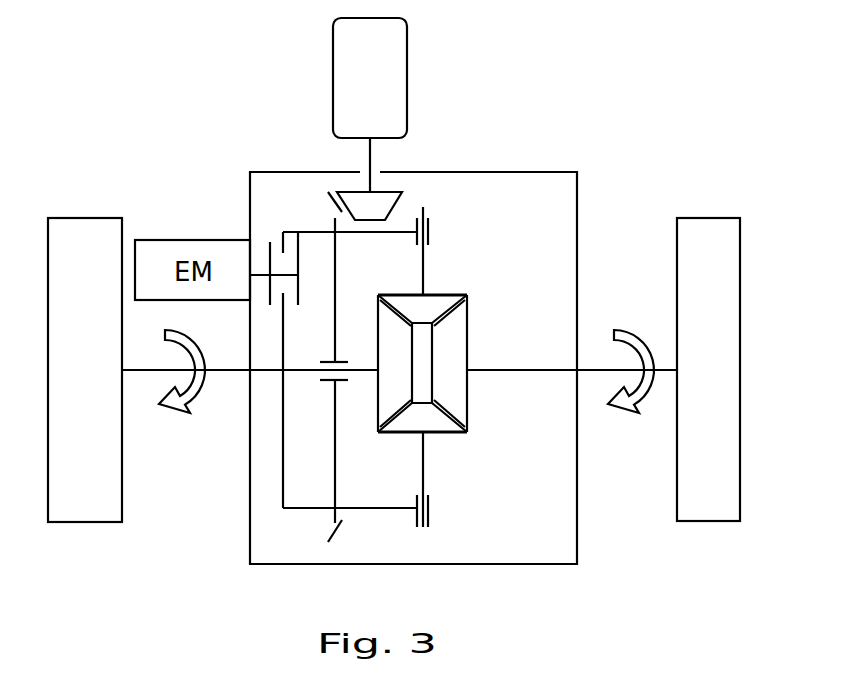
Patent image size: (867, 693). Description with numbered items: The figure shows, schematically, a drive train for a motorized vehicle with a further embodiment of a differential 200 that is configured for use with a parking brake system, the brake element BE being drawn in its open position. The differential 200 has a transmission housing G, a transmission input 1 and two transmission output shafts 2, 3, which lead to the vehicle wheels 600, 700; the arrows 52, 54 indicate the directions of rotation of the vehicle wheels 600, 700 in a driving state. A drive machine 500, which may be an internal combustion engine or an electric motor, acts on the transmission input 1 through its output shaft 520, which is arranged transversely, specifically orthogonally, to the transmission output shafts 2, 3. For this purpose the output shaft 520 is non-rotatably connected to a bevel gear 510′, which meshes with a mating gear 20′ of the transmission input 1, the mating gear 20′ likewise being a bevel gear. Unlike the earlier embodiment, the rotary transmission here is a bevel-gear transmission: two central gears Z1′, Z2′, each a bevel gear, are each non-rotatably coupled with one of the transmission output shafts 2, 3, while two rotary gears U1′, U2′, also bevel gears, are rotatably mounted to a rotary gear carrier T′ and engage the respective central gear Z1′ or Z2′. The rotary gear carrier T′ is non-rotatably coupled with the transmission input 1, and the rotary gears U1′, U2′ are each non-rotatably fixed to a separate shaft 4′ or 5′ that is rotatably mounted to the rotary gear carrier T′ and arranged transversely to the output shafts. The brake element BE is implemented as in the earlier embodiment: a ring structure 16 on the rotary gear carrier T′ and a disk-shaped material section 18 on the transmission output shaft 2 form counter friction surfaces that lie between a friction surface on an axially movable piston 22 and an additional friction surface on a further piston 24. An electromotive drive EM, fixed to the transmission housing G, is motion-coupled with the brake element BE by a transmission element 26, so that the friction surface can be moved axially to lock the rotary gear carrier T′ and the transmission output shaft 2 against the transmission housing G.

The transmission input 1 is at (317, 196).
The transmission output shaft 2 is at (152, 372).
The transmission output shaft 3 is at (611, 373).
The ring structure 16 is at (281, 238).
The material section 18 is at (282, 440).
The mating gear 20′ is at (329, 190).
The piston 22 is at (299, 231).
The piston 24 is at (269, 246).
The transmission element 26 is at (268, 277).
The arrow 52 is at (188, 409).
The arrow 54 is at (641, 406).
The differential 200 is at (602, 205).
The drive machine 500 is at (370, 78).
The bevel gear 510′ is at (398, 206).
The output shaft 520 is at (371, 150).
The vehicle wheel 600 is at (85, 522).
The vehicle wheel 700 is at (707, 522).
The brake element BE is at (268, 324).
The rotary gear carrier T′ is at (321, 410).
The transmission housing G is at (578, 524).
The shaft 4′ is at (421, 258).
The shaft 5′ is at (428, 526).
The rotary gear U1′ is at (444, 307).
The rotary gear U2′ is at (444, 430).
The central gear Z1′ is at (390, 412).
The central gear Z2′ is at (455, 393).